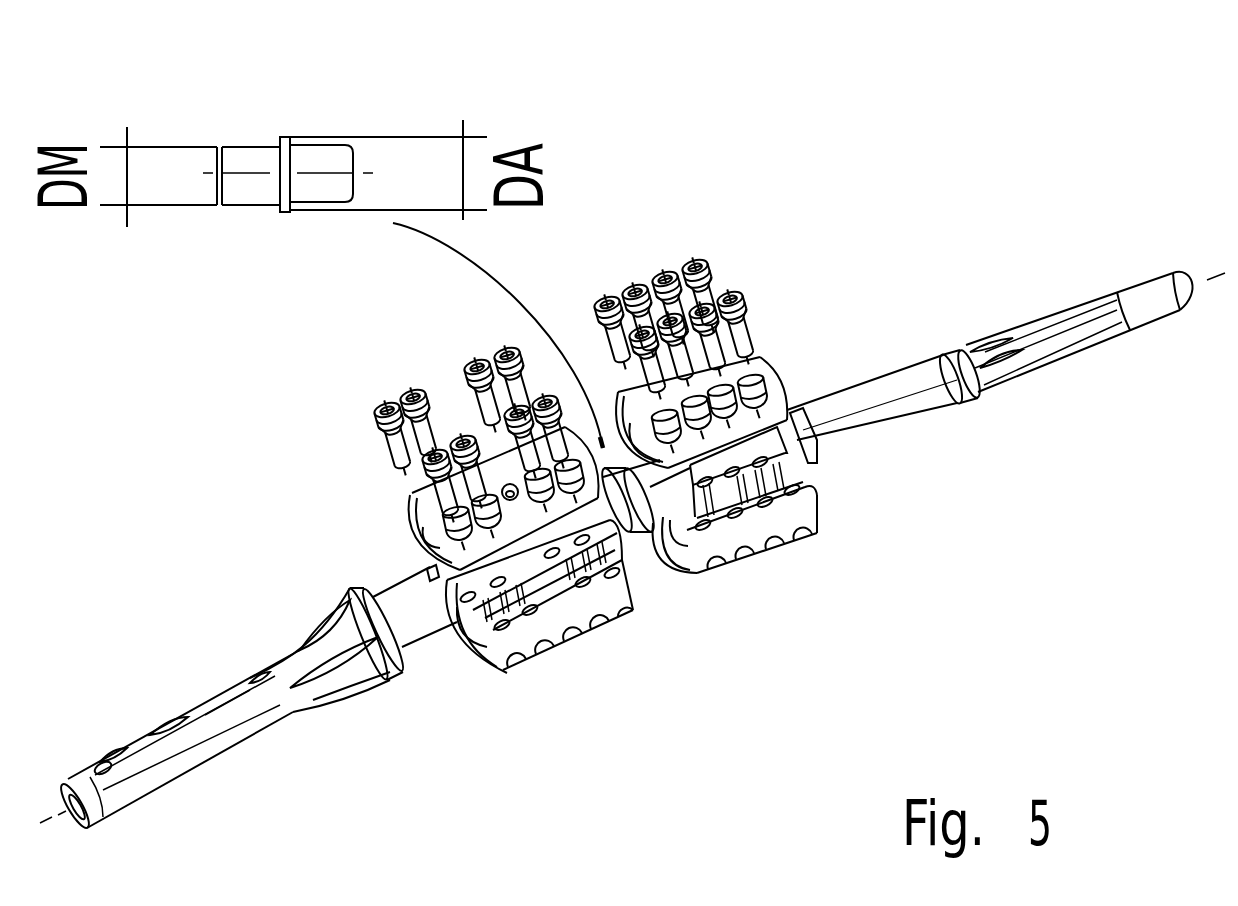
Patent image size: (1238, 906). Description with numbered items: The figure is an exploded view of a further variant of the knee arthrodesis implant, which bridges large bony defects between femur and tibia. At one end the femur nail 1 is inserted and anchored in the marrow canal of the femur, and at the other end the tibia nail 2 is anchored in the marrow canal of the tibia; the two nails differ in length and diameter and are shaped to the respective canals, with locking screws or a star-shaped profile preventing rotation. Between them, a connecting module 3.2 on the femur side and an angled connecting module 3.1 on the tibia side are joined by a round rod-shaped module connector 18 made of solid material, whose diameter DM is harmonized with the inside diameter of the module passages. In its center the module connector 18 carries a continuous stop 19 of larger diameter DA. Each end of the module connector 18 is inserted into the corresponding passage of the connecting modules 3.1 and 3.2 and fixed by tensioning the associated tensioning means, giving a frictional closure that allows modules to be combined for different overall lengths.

The femur nail 1 is at (987, 328).
The tibia nail 2 is at (277, 723).
The connecting module 3.1 is at (547, 643).
The connecting module 3.2 is at (810, 535).
The module connector 18 is at (218, 167).
The stop 19 is at (287, 127).